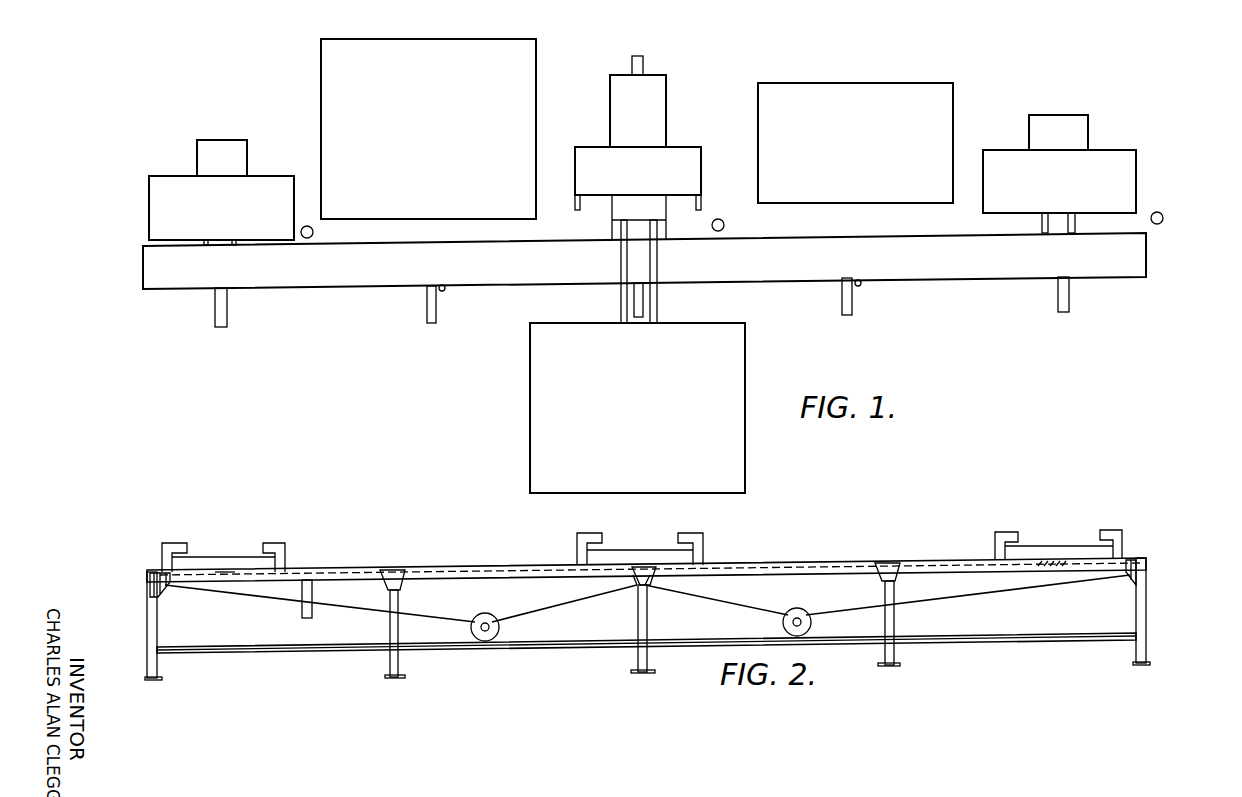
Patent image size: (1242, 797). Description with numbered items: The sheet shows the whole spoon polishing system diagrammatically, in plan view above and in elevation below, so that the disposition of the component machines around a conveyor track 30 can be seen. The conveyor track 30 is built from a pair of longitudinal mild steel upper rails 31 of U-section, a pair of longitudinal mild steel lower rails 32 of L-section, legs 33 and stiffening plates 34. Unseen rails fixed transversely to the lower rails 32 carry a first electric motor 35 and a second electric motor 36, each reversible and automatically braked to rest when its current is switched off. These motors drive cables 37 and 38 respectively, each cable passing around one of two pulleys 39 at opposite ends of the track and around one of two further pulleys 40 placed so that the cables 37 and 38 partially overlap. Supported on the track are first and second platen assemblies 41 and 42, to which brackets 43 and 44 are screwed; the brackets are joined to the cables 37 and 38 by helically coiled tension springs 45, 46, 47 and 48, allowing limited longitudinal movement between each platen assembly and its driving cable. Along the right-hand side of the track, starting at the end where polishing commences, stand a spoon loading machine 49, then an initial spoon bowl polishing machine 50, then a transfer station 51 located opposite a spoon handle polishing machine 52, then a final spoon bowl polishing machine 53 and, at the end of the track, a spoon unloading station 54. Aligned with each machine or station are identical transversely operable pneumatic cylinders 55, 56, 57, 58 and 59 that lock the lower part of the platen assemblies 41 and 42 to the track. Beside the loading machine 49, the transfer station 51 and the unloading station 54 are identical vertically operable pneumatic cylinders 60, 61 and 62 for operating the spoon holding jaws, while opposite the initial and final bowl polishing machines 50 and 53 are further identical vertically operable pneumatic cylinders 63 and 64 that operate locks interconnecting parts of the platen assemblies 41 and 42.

In FIG. 1, the conveyor track 30 is at (1118, 265).
In FIG. 2, the conveyor track 30 is at (1152, 612).
In FIG. 2, the upper rails 31 is at (935, 568).
In FIG. 2, the lower rails 32 is at (1017, 640).
In FIG. 2, the legs 33 is at (158, 669).
In FIG. 2, the stiffening plates 34 is at (165, 592).
In FIG. 2, the first electric motor 35 is at (786, 614).
In FIG. 2, the second electric motor 36 is at (494, 618).
In FIG. 2, the cable 37 is at (985, 598).
In FIG. 2, the cable 38 is at (538, 620).
In FIG. 2, the pulleys 39 is at (160, 572).
In FIG. 2, the further pulleys 40 is at (658, 578).
In FIG. 2, the first platen assembly 41 is at (1057, 540).
In FIG. 2, the second platen assembly 42 is at (222, 540).
In FIG. 2, the bracket 43 is at (1062, 565).
In FIG. 2, the bracket 44 is at (225, 572).
In FIG. 2, the helically coiled tension spring 45 is at (1080, 570).
In FIG. 2, the helically coiled tension spring 46 is at (1045, 563).
In FIG. 2, the helically coiled tension spring 47 is at (238, 590).
In FIG. 2, the helically coiled tension spring 48 is at (205, 590).
In FIG. 1, the spoon loading machine 49 is at (1070, 189).
In FIG. 1, the initial spoon bowl polishing machine 50 is at (856, 156).
In FIG. 1, the transfer station 51 is at (650, 130).
In FIG. 1, the spoon handle polishing machine 52 is at (652, 427).
In FIG. 1, the final spoon bowl polishing machine 53 is at (428, 130).
In FIG. 1, the spoon unloading station 54 is at (233, 216).
In FIG. 1, the transversely operable pneumatic cylinder 55 is at (1057, 312).
In FIG. 1, the transversely operable pneumatic cylinder 56 is at (840, 312).
In FIG. 1, the transversely operable pneumatic cylinder 57 is at (643, 300).
In FIG. 1, the transversely operable pneumatic cylinder 58 is at (425, 318).
In FIG. 1, the transversely operable pneumatic cylinder 59 is at (227, 320).
In FIG. 1, the vertically operable pneumatic cylinder 60 is at (1161, 214).
In FIG. 1, the vertically operable pneumatic cylinder 61 is at (721, 219).
In FIG. 1, the vertically operable pneumatic cylinder 62 is at (313, 232).
In FIG. 1, the vertically operable pneumatic cylinder 63 is at (860, 286).
In FIG. 1, the vertically operable pneumatic cylinder 64 is at (444, 291).